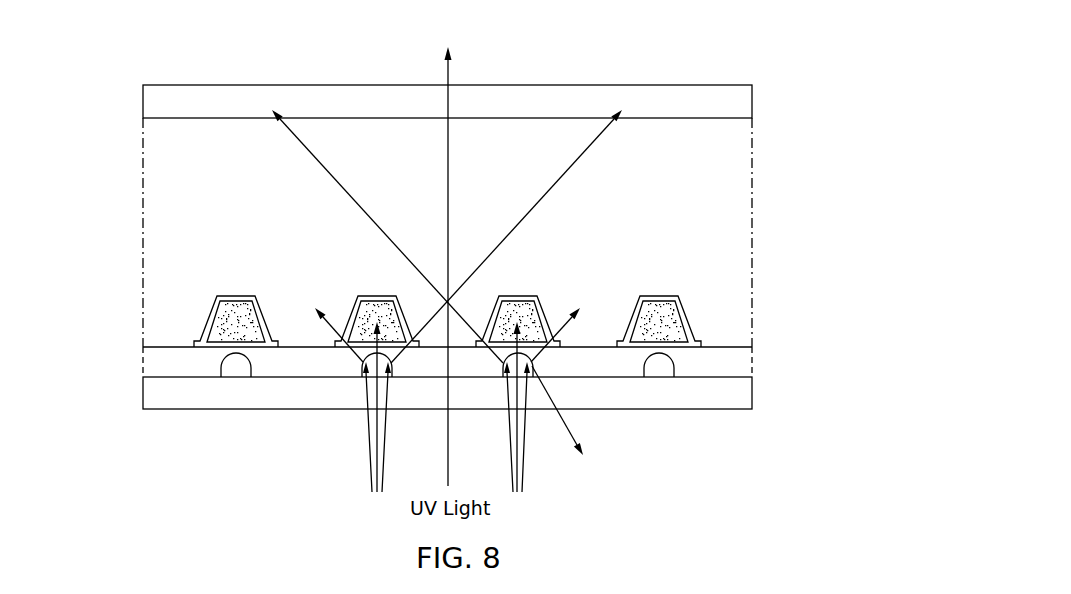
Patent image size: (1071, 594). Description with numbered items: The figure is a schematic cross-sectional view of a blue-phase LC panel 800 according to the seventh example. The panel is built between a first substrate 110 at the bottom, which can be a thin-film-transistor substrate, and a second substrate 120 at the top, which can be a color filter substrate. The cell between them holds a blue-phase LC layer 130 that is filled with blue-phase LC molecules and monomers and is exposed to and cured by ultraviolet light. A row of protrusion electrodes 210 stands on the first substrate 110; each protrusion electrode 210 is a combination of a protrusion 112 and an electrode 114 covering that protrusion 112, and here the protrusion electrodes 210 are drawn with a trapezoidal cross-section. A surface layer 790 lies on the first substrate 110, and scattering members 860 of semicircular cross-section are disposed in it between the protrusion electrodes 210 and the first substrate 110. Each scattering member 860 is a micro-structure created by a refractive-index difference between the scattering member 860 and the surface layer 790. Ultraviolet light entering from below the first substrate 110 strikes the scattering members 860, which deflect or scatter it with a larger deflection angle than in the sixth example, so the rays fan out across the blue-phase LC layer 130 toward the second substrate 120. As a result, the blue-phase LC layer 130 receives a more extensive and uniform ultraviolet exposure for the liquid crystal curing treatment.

The blue-phase LC panel 800 is at (750, 37).
The second substrate 120 is at (742, 102).
The blue-phase LC layer 130 is at (742, 239).
The surface layer 790 is at (745, 370).
The first substrate 110 is at (745, 401).
The scattering member 860 is at (662, 369).
The protrusion electrode 210 is at (372, 310).
The electrode 114 is at (214, 300).
The protrusion 112 is at (224, 337).